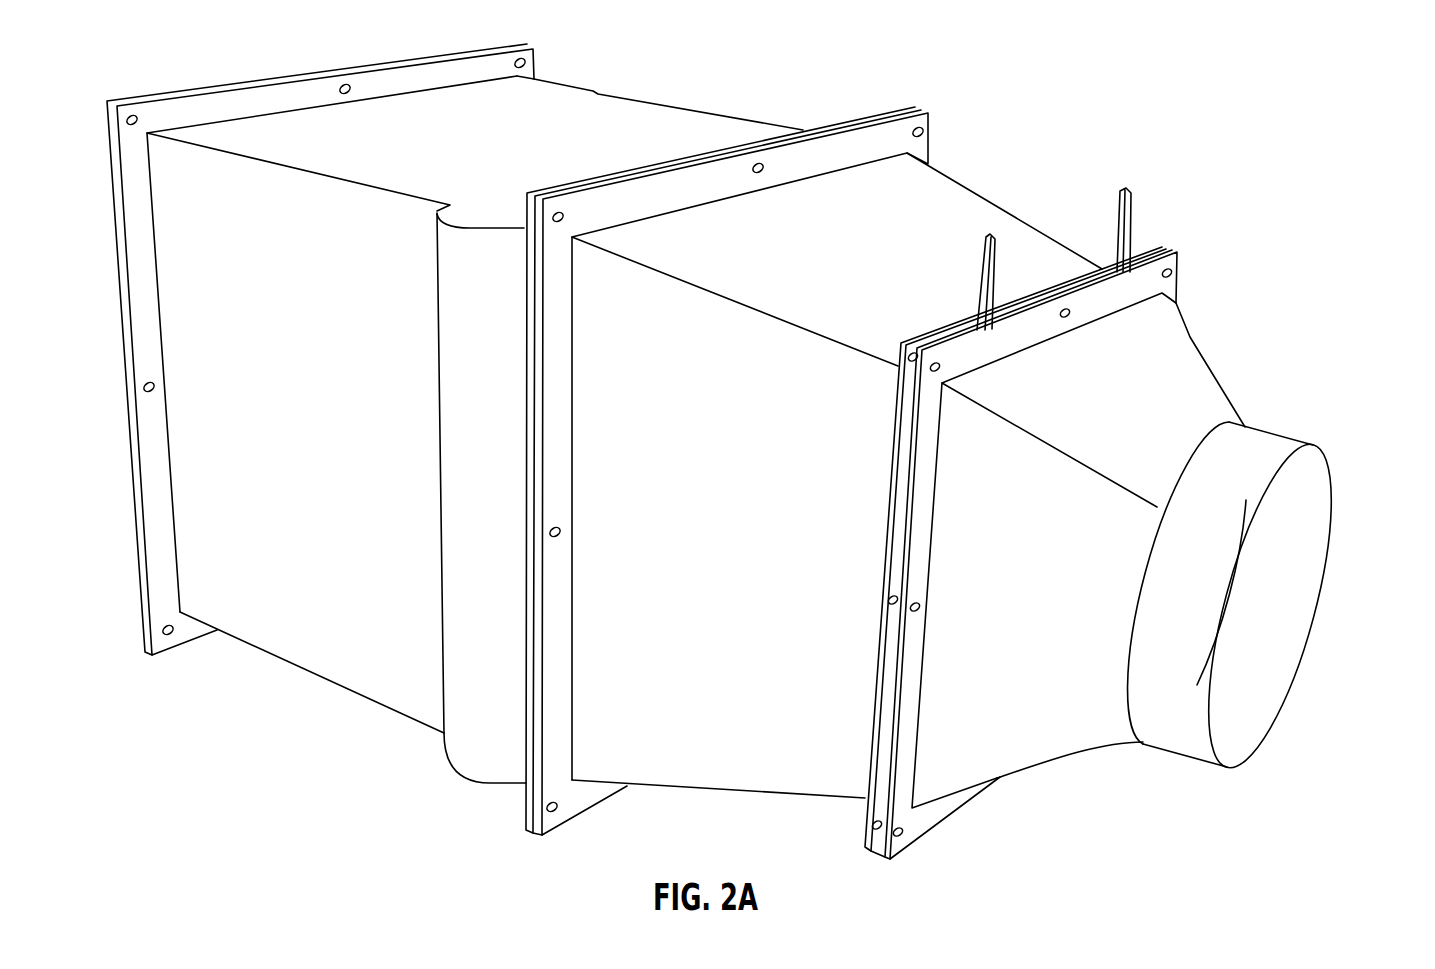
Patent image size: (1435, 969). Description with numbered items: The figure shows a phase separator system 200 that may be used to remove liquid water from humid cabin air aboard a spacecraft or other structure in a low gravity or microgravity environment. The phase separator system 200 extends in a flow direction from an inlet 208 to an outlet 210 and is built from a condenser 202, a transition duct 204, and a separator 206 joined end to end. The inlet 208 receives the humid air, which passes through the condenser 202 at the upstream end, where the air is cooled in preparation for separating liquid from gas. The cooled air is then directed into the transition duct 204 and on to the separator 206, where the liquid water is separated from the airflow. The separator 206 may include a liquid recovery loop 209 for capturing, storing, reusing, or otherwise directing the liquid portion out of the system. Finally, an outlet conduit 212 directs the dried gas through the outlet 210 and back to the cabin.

The phase separator system 200 is at (734, 448).
The condenser 202 is at (698, 112).
The transition duct 204 is at (851, 483).
The separator 206 is at (983, 197).
The inlet 208 is at (133, 78).
The liquid recovery loop 209 is at (1135, 208).
The outlet 210 is at (1328, 655).
The outlet conduit 212 is at (1208, 363).